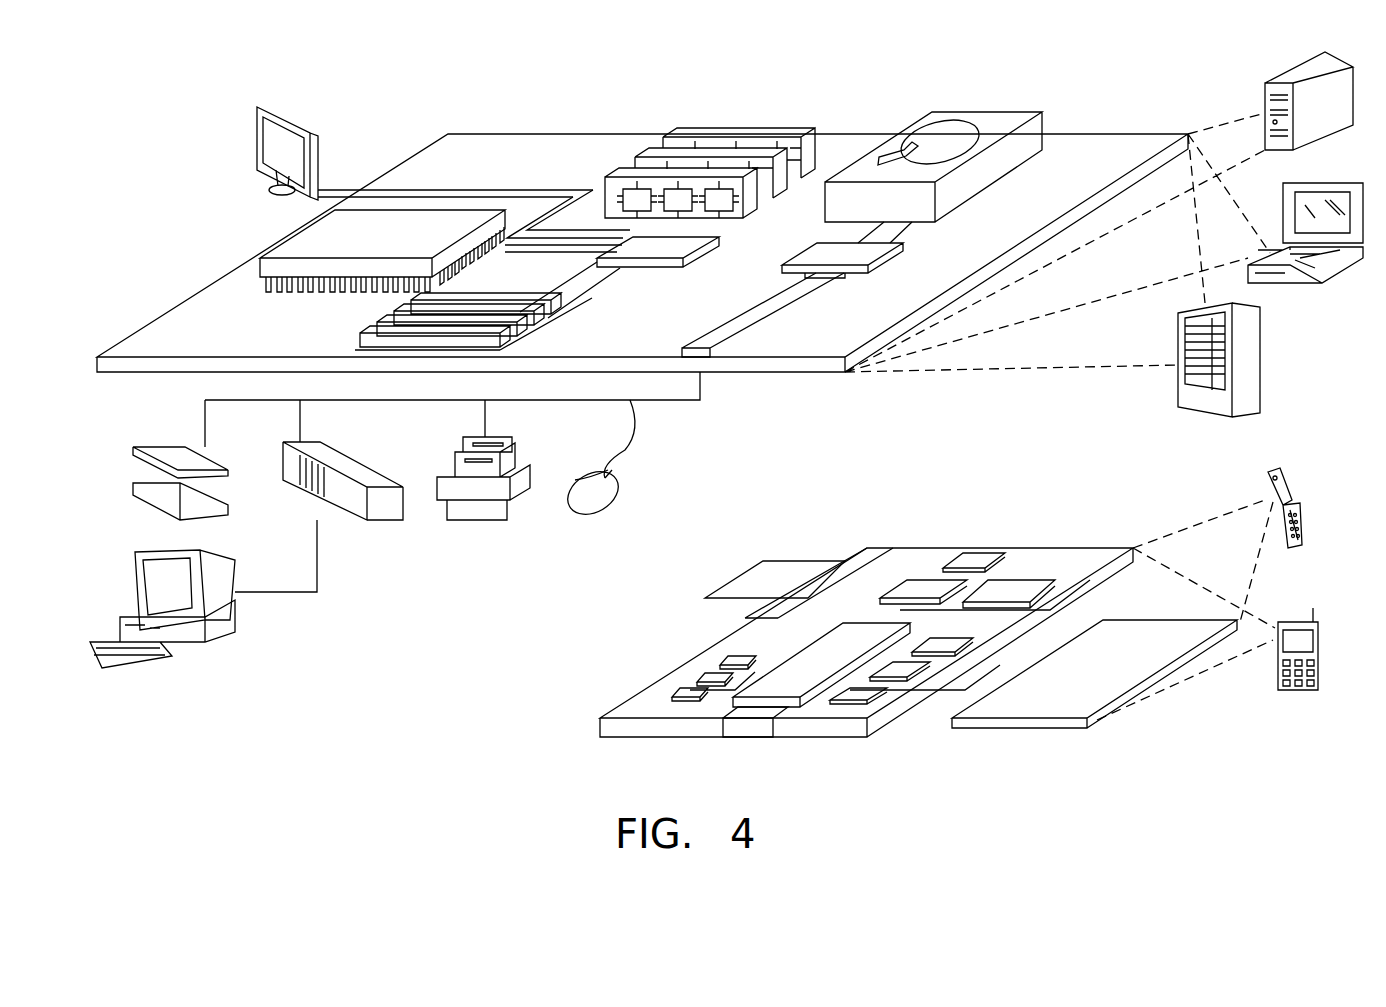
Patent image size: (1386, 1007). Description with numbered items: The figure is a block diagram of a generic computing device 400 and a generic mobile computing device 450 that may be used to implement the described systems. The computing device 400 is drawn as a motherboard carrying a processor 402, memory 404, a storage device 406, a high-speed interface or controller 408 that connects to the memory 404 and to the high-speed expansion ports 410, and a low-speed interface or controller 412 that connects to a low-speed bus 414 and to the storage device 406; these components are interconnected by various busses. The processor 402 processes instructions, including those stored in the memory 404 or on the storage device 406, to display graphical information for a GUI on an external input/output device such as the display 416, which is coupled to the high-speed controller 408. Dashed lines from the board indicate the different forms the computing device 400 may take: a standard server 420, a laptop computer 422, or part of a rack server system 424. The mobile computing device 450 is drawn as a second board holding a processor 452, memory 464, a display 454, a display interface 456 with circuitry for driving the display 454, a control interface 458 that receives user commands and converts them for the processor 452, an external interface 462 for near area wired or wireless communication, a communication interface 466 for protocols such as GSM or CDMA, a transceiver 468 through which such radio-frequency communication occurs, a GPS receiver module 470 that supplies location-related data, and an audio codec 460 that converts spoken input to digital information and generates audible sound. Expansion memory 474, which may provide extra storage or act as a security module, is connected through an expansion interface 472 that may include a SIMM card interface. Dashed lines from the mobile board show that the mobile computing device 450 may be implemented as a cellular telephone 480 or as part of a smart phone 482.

The computing device 400 is at (680, 390).
The processor 402 is at (283, 240).
The memory 404 is at (740, 130).
The storage device 406 is at (972, 112).
The high-speed interface or controller 408 is at (672, 243).
The high-speed expansion ports 410 is at (388, 320).
The low-speed interface or controller 412 is at (820, 252).
The low-speed bus 414 is at (702, 347).
The display 416 is at (258, 107).
The standard server 420 is at (1275, 83).
The laptop computer 422 is at (1340, 183).
The rack server system 424 is at (1262, 363).
The mobile computing device 450 is at (556, 742).
The processor 452 is at (790, 668).
The display 454 is at (1134, 638).
The display interface 456 is at (850, 695).
The control interface 458 is at (910, 668).
The audio codec 460 is at (935, 640).
The external interface 462 is at (750, 722).
The memory 464 is at (700, 690).
The communication interface 466 is at (925, 585).
The transceiver 468 is at (1015, 585).
The GPS receiver module 470 is at (975, 557).
The expansion interface 472 is at (845, 562).
The expansion memory 474 is at (763, 561).
The cellular telephone 480 is at (1272, 470).
The smart phone 482 is at (1293, 620).